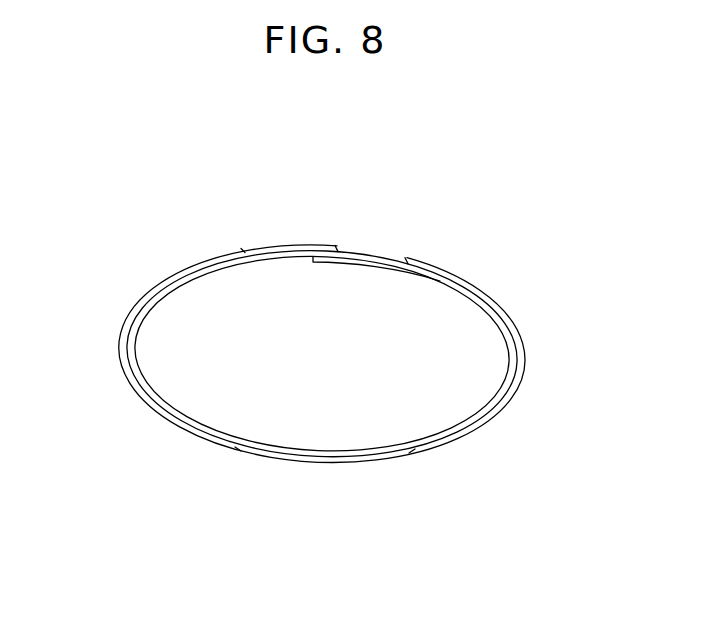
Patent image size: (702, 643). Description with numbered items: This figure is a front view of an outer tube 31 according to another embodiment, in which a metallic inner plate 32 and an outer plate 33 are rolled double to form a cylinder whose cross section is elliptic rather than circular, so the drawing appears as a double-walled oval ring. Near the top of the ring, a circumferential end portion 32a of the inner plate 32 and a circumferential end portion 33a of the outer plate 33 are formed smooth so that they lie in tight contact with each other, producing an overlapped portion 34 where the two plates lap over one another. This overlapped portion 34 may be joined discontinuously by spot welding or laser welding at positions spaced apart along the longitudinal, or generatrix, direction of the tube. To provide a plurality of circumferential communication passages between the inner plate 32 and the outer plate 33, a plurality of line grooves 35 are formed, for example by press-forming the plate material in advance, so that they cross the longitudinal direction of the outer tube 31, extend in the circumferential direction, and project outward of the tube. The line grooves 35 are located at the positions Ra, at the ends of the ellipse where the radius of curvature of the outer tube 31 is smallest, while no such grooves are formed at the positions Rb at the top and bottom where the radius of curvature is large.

The outer tube 31 is at (326, 341).
The inner plate 32 is at (152, 303).
The circumferential end portion of the inner plate 32a is at (318, 262).
The outer plate 33 is at (373, 463).
The circumferential end portion of the outer plate 33a is at (340, 243).
The overlapped portion 34 is at (331, 235).
The line grooves 35 is at (185, 431).
The position where the radius of curvature is the smallest Ra is at (115, 357).
The position of a large radius of curvature Rb is at (306, 229).